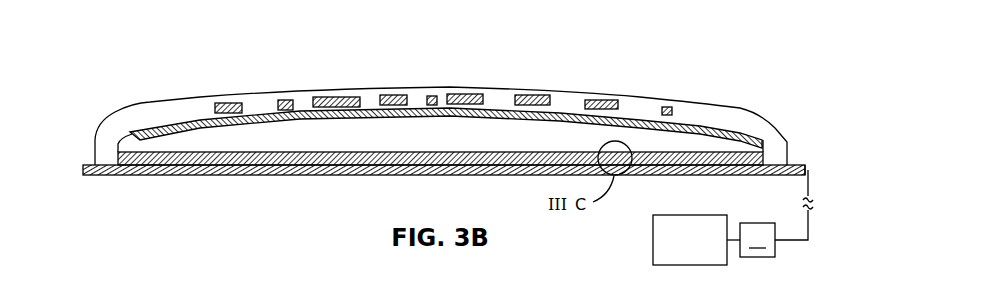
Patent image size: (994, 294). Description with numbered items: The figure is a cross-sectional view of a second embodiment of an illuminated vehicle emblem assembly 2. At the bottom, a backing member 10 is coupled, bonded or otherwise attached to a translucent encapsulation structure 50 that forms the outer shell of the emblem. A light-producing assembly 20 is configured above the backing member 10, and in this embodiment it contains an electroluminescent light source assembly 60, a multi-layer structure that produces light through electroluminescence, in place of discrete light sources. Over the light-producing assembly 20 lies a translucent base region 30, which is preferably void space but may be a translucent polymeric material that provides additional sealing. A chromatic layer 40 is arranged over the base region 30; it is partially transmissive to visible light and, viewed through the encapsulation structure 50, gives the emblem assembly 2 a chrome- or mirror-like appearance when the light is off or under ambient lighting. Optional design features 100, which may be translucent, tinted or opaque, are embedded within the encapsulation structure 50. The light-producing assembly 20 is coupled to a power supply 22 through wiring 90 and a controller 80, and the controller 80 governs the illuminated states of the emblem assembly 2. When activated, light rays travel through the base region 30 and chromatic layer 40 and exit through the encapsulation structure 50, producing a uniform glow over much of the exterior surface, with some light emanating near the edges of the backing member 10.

The illuminated vehicle emblem assembly 2 is at (188, 52).
The backing member 10 is at (93, 164).
The light-producing assembly 20 is at (193, 142).
The power supply 22 is at (652, 238).
The base region 30 is at (680, 138).
The chromatic layer 40 is at (222, 176).
The encapsulation structure 50 is at (572, 98).
The electroluminescent light source assembly 60 is at (742, 152).
The controller 80 is at (751, 240).
The wiring 90 is at (795, 241).
The design features 100 is at (229, 102).